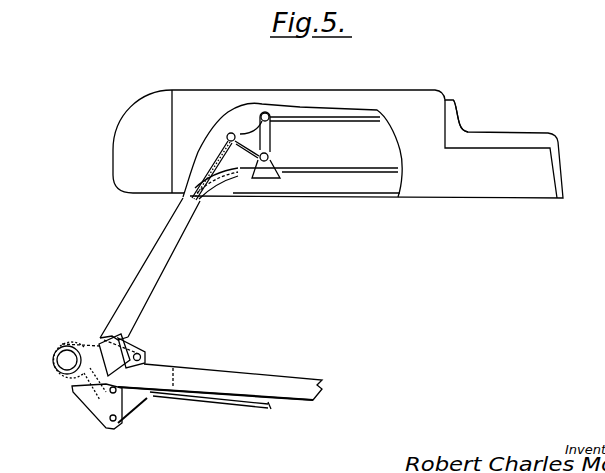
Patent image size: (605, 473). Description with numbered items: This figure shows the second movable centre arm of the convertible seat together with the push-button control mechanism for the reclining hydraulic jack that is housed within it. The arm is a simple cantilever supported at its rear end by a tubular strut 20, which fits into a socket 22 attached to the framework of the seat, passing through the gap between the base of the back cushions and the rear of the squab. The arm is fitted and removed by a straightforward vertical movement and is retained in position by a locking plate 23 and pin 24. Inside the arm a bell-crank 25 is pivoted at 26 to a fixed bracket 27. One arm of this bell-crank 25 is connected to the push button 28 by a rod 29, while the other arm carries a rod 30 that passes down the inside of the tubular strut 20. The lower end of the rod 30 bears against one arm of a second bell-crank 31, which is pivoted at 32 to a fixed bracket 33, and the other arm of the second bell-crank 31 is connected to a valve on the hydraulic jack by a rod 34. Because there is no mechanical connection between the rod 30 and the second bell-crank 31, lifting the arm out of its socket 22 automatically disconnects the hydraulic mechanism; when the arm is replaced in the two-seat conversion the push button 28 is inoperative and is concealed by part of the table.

The tubular strut 20 is at (148, 267).
The socket 22 is at (88, 378).
The locking plate 23 is at (132, 350).
The pin 24 is at (146, 356).
The bell-crank 25 is at (263, 125).
The pivot 26 is at (267, 163).
The fixed bracket 27 is at (260, 172).
The push button 28 is at (462, 116).
The rod 29 is at (313, 118).
The rod 30 is at (216, 166).
The second bell-crank 31 is at (103, 407).
The pivot 32 is at (116, 422).
The fixed bracket 33 is at (128, 400).
The rod 34 is at (165, 396).